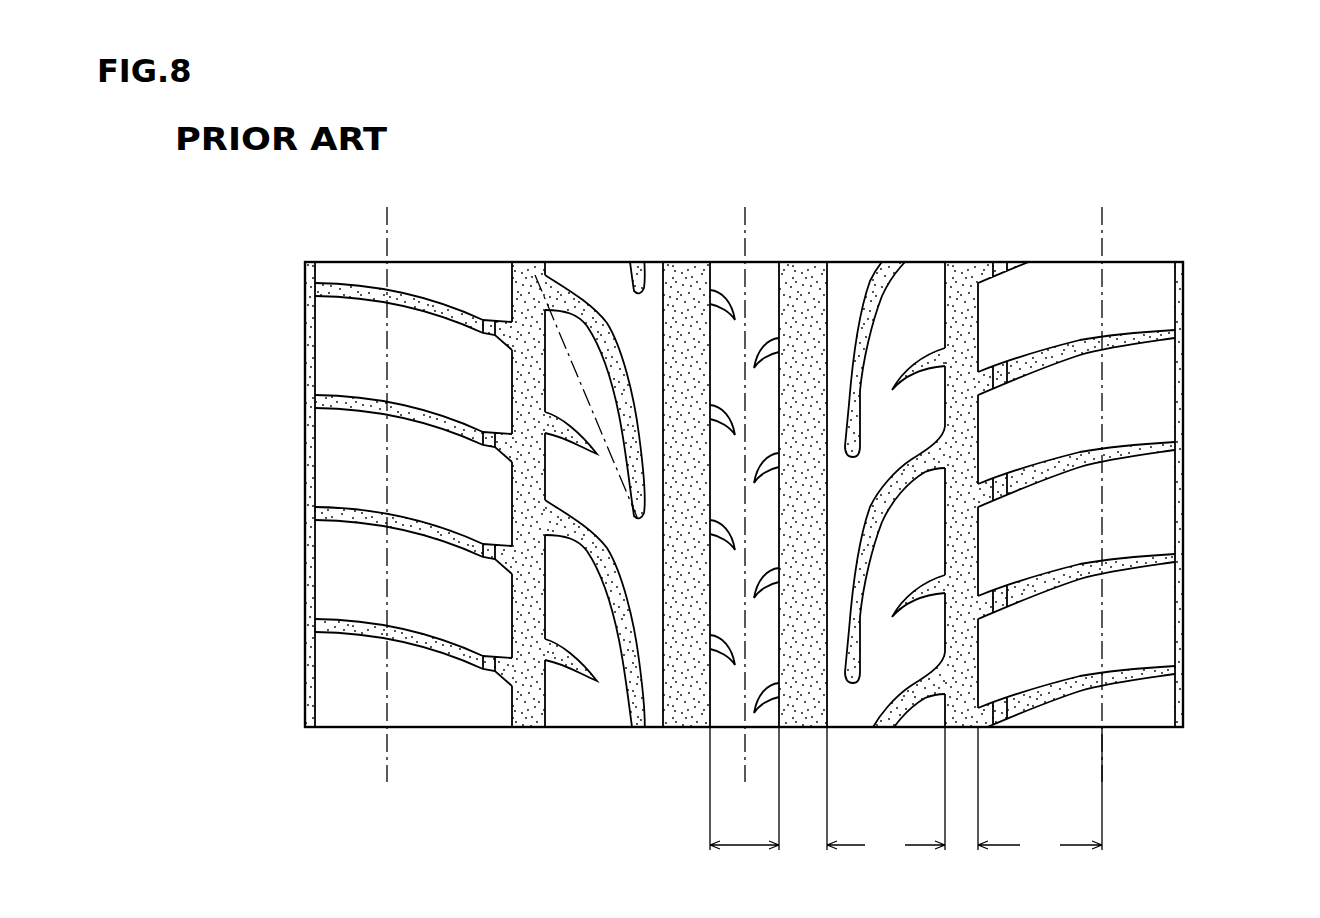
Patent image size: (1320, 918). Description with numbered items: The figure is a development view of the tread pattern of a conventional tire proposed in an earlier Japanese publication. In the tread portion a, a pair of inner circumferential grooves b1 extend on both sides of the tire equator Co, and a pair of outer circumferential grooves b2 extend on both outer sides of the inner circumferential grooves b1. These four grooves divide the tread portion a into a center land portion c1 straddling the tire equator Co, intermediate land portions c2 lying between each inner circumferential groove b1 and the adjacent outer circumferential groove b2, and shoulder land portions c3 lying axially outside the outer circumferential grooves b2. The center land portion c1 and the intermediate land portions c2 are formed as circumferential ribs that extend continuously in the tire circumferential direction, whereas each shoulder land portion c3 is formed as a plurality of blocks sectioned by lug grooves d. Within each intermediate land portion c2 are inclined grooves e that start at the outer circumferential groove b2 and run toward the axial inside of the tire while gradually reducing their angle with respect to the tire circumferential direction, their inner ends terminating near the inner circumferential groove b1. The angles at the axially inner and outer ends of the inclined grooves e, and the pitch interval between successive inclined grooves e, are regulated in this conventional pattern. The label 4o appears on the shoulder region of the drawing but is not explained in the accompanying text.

The tread portion a is at (1200, 248).
The inner circumferential groove b1 is at (681, 268).
The outer circumferential groove b2 is at (526, 268).
The tire equator Co is at (744, 482).
The inclined groove e is at (875, 340).
The lug groove d is at (1140, 568).
The shoulder land portion 4o is at (1058, 717).
The center land portion c1 is at (744, 802).
The intermediate land portion c2 is at (886, 792).
The shoulder land portion c3 is at (1040, 792).